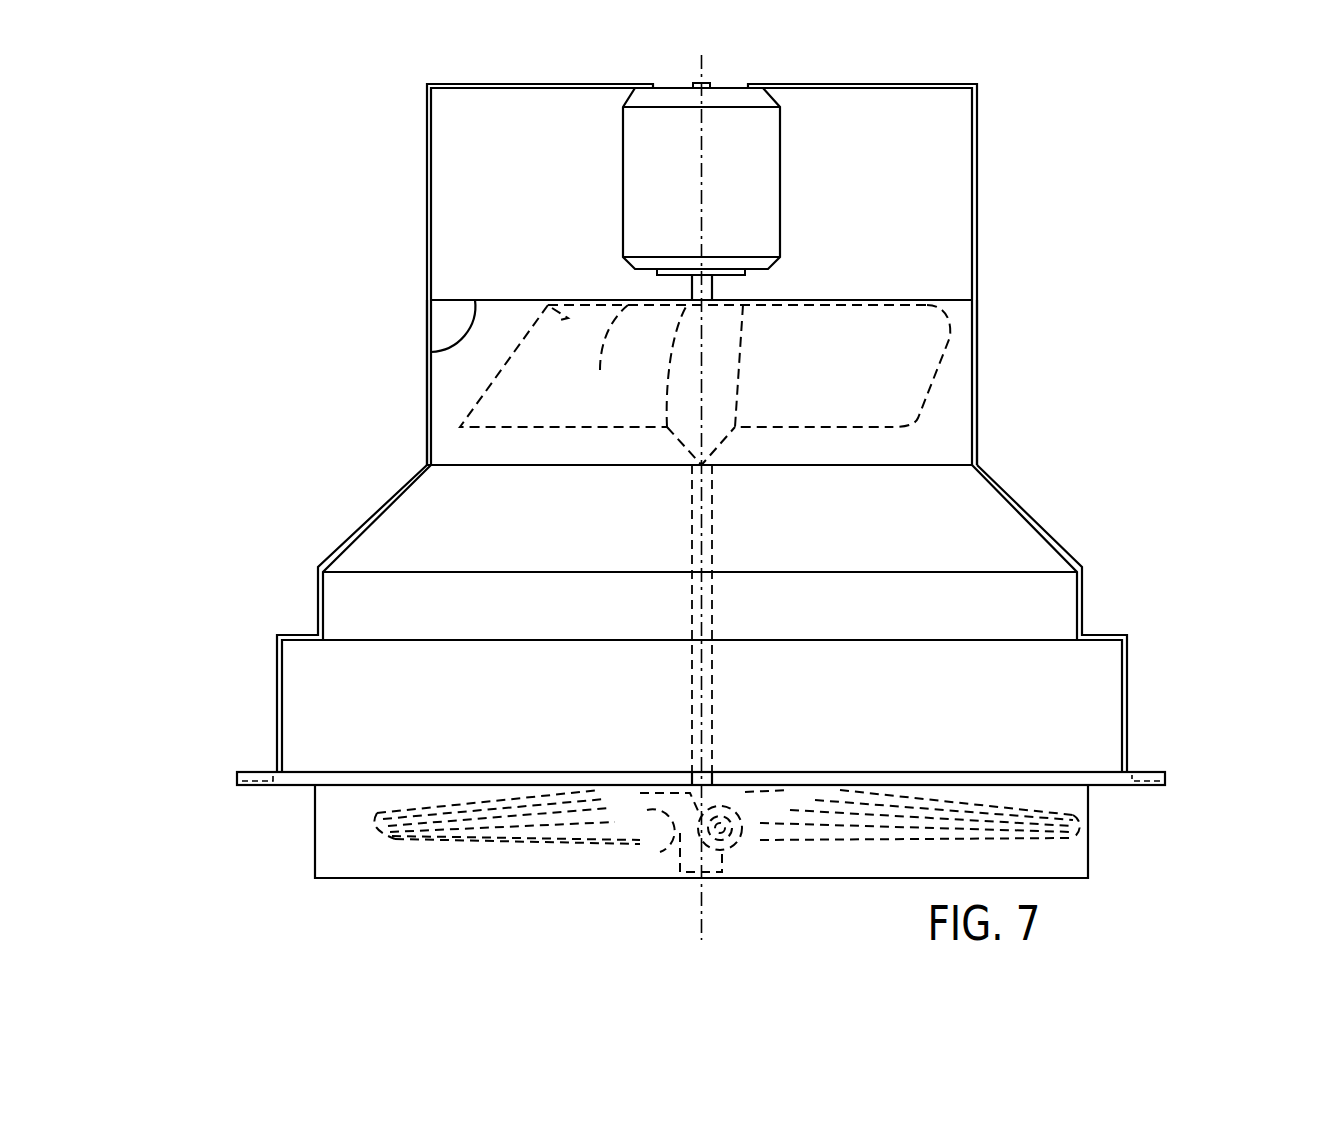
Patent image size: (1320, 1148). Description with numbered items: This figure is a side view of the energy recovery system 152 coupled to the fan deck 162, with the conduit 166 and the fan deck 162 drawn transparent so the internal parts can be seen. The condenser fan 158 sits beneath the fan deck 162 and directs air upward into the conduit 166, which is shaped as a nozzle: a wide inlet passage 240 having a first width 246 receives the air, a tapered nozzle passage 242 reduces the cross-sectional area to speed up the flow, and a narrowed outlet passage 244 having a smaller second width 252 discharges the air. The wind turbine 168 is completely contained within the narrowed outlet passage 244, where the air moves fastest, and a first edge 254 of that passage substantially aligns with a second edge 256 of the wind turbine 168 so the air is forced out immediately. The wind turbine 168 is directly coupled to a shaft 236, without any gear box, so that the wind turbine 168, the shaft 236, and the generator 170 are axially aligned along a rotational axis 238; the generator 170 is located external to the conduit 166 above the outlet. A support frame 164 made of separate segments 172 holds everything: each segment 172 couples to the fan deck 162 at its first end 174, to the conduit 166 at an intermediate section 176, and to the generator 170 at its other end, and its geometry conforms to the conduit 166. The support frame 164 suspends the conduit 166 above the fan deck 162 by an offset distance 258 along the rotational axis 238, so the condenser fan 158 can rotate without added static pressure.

The energy recovery system 152 is at (1058, 168).
The condenser fan 158 is at (535, 822).
The fan deck 162 is at (300, 778).
The support frame 164 is at (400, 246).
The conduit 166 is at (1020, 572).
The wind turbine 168 is at (945, 363).
The generator 170 is at (760, 152).
The segment 172 is at (427, 125).
The first end 174 is at (237, 785).
The intermediate section 176 is at (427, 410).
The shaft 236 is at (713, 292).
The rotational axis 238 is at (695, 897).
The inlet passage 240 is at (1053, 603).
The nozzle passage 242 is at (992, 513).
The narrowed outlet passage 244 is at (955, 417).
The first width 246 is at (1077, 650).
The second width 252 is at (972, 240).
The first edge 254 is at (431, 352).
The second edge 256 is at (604, 350).
The offset distance 258 is at (273, 637).